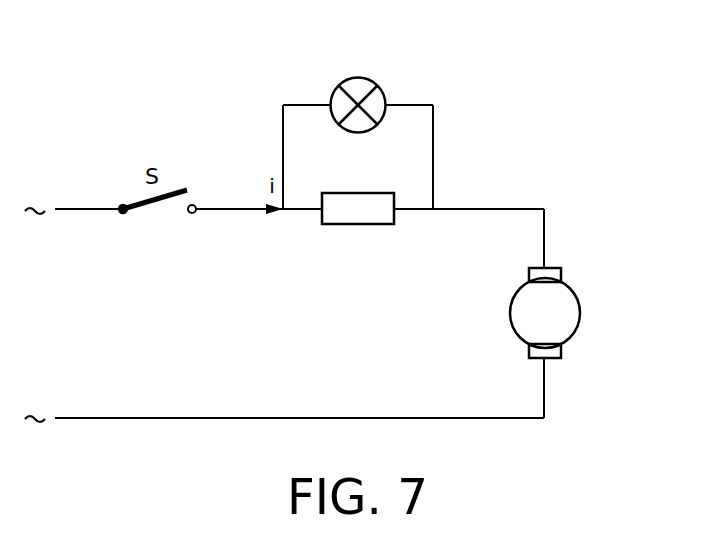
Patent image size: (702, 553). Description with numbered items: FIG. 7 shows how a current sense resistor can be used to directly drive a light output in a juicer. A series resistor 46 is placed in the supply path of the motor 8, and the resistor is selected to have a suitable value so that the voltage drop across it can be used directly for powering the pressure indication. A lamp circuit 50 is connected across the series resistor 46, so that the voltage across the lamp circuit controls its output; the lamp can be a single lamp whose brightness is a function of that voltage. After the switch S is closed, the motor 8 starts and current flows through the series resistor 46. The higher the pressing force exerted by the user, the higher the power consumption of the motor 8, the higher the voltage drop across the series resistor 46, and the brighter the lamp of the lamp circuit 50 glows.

The lamp circuit 50 is at (362, 77).
The series resistor 46 is at (364, 225).
The motor 8 is at (580, 312).